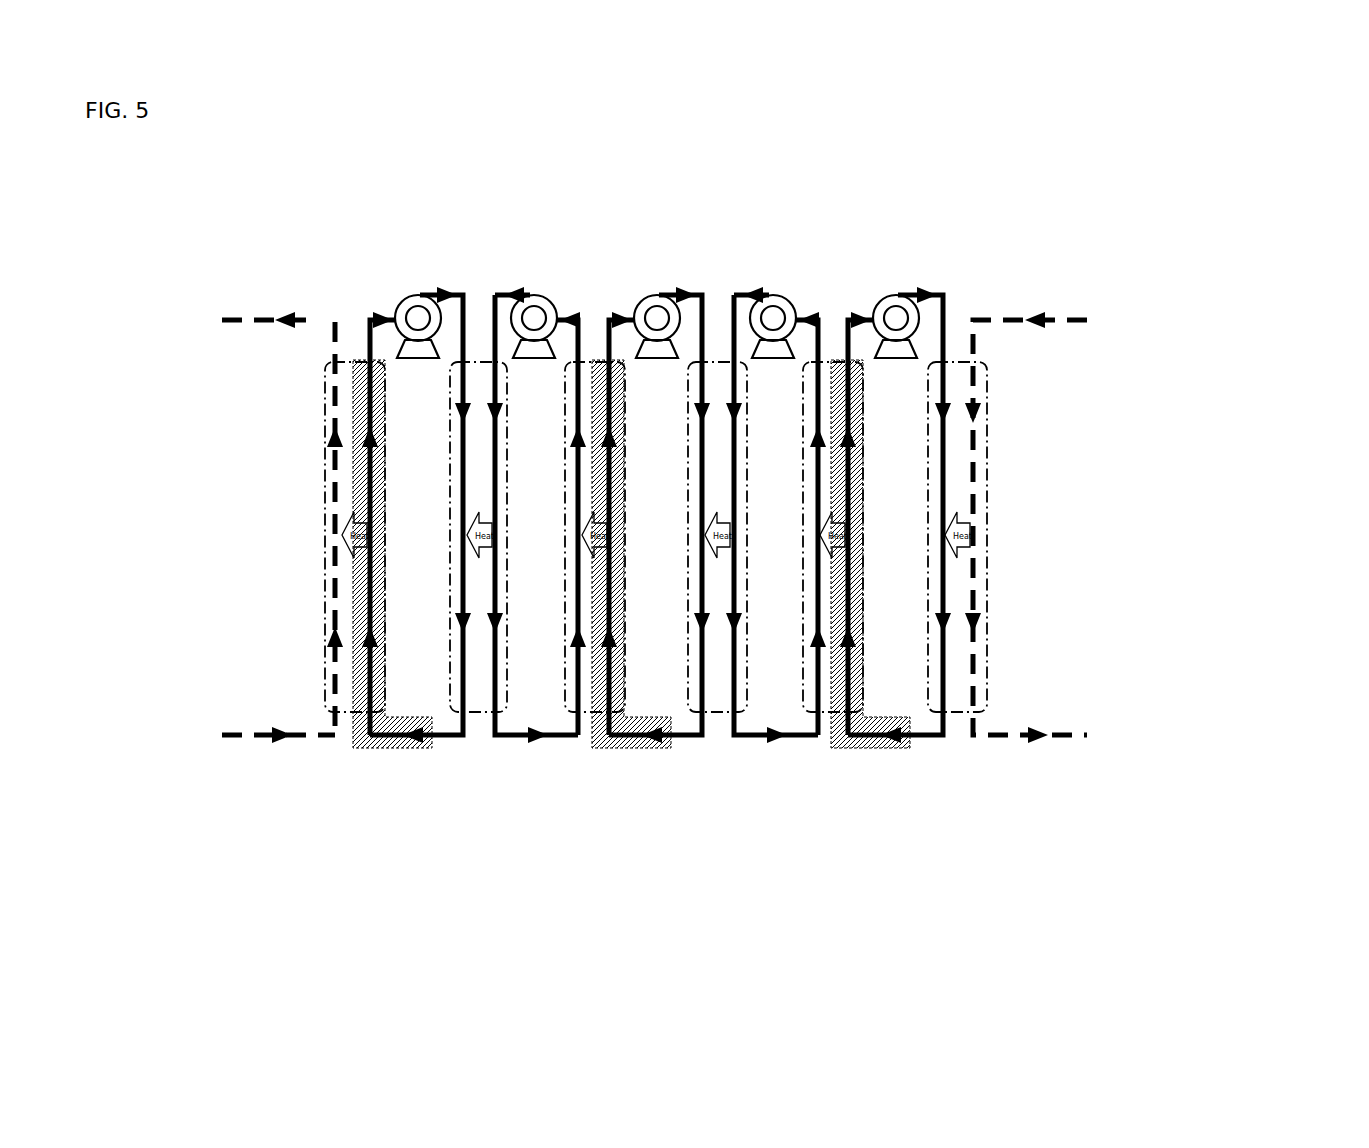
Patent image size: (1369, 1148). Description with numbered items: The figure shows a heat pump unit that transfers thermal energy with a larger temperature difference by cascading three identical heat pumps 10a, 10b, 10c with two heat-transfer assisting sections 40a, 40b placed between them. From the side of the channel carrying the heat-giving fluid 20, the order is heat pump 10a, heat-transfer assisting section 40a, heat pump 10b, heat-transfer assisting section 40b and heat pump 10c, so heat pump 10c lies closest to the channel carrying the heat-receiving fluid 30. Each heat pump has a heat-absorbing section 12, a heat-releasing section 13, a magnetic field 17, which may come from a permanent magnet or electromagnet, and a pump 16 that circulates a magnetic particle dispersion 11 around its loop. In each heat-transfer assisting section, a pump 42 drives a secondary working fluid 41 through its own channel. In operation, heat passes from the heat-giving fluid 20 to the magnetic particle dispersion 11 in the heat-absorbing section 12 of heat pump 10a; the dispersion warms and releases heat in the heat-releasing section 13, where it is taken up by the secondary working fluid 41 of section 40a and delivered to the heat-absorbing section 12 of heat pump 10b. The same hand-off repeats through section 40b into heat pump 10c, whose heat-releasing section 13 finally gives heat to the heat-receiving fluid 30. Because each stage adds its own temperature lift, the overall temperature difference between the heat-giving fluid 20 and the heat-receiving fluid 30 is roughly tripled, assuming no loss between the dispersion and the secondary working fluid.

The heat pump 10a is at (850, 790).
The heat pump 10b is at (610, 790).
The heat pump 10c is at (368, 790).
The magnetic particle dispersion 11 is at (445, 293).
The heat-absorbing section 12 is at (483, 712).
The heat-releasing section 13 is at (350, 712).
The pump 16 is at (398, 304).
The magnetic field 17 is at (393, 746).
The heat-giving fluid 20 is at (1047, 320).
The heat-receiving fluid 30 is at (237, 318).
The heat-transfer assisting section 40a is at (728, 243).
The heat-transfer assisting section 40b is at (492, 243).
The secondary working fluid 41 is at (578, 315).
The pump 42 is at (521, 300).